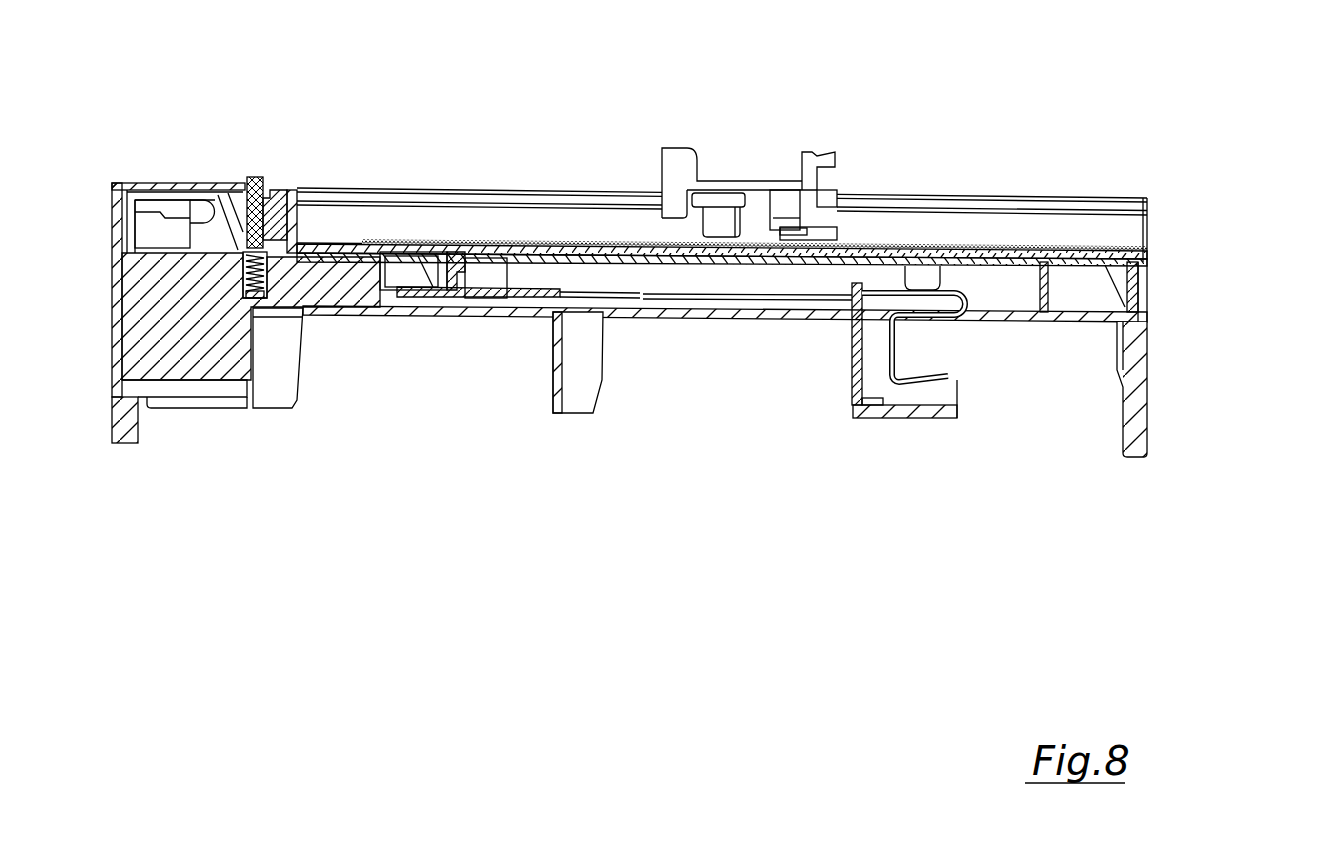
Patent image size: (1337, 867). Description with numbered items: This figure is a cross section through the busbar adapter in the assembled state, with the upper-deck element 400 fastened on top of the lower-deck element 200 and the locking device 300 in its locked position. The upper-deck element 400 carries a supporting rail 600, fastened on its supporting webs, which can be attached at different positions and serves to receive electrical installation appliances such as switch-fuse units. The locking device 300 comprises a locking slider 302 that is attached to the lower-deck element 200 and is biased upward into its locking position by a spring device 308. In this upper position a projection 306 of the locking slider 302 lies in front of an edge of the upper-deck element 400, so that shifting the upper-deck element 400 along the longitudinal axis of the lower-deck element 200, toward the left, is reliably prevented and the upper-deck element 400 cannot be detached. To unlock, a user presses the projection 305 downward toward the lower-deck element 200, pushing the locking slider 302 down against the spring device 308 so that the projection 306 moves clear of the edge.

The locking device 300 is at (232, 170).
The projection 305 is at (258, 177).
The projection of the locking slider 306 is at (282, 186).
The locking slider 302 is at (342, 187).
The spring device 308 is at (267, 282).
The supporting rail 600 is at (813, 172).
The upper-deck element 400 is at (1175, 225).
The lower-deck element 200 is at (1175, 327).